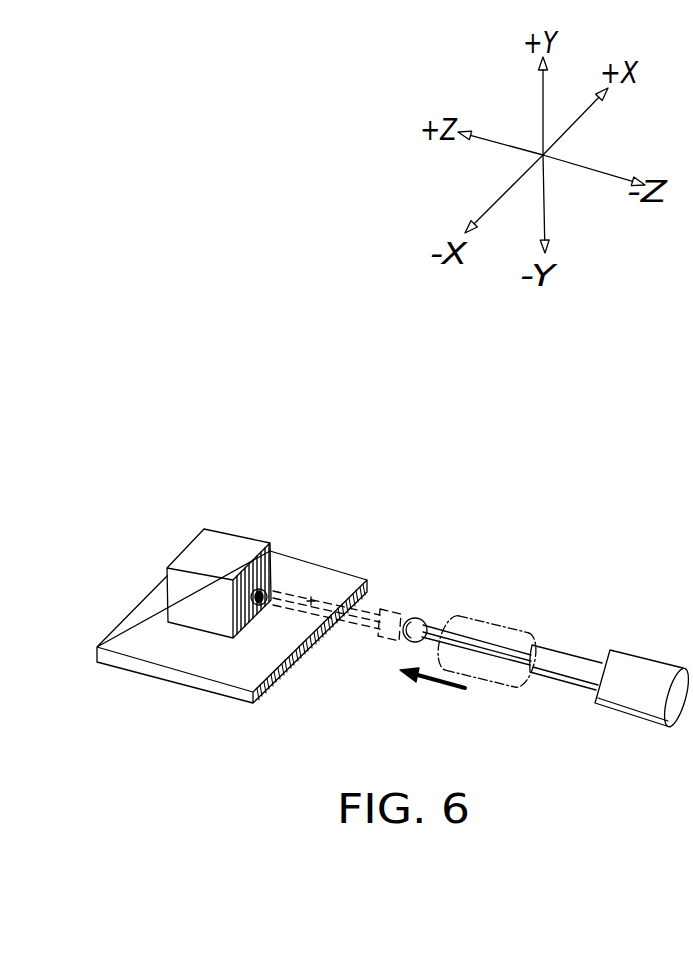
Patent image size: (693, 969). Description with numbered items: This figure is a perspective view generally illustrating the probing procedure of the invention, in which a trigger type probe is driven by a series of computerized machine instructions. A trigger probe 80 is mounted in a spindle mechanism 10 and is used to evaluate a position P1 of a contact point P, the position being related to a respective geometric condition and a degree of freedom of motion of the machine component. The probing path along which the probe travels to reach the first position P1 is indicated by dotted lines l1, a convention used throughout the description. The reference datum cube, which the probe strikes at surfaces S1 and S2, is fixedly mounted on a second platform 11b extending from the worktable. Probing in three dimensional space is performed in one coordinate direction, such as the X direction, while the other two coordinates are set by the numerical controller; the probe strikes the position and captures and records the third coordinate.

The spindle mechanism 10 is at (637, 647).
The trigger probe 80 is at (520, 630).
The contact point P is at (403, 618).
The first position P1 is at (260, 606).
The side surface of block S1 is at (265, 585).
The block S2 is at (193, 563).
The second platform 11b is at (130, 642).
The dotted lines l1 is at (311, 601).